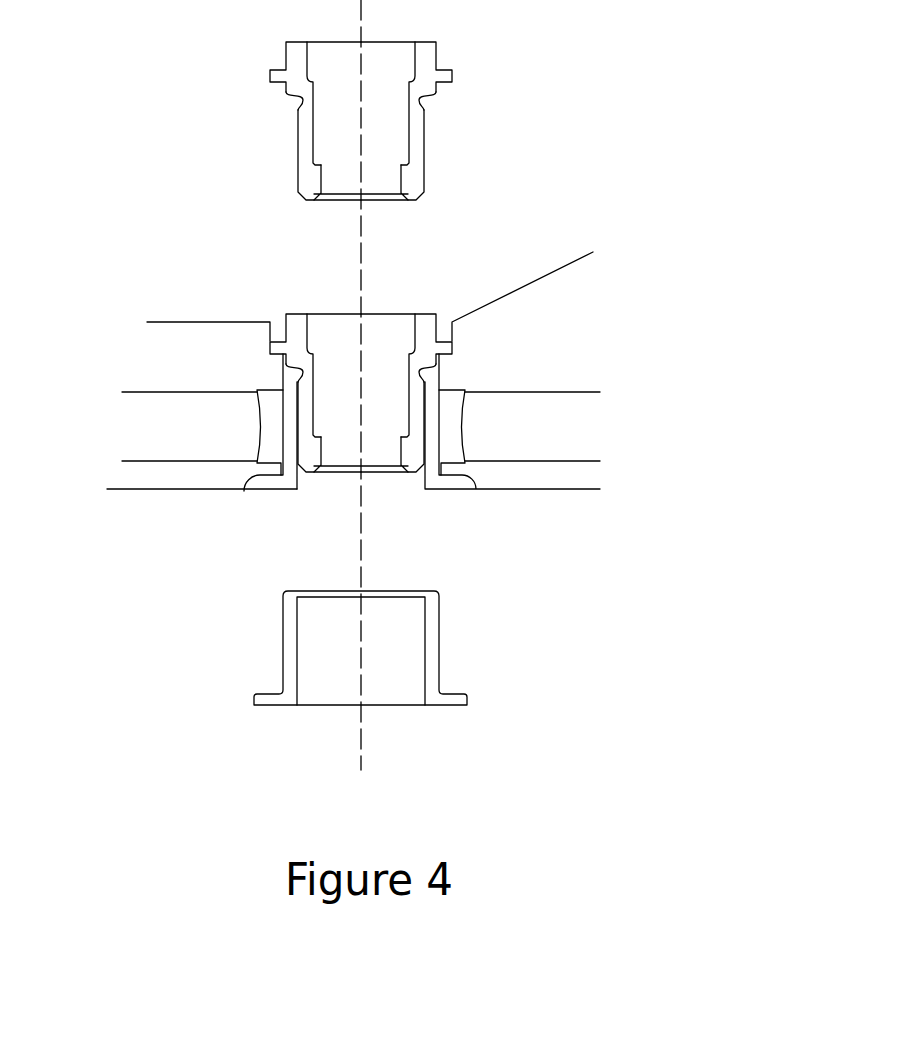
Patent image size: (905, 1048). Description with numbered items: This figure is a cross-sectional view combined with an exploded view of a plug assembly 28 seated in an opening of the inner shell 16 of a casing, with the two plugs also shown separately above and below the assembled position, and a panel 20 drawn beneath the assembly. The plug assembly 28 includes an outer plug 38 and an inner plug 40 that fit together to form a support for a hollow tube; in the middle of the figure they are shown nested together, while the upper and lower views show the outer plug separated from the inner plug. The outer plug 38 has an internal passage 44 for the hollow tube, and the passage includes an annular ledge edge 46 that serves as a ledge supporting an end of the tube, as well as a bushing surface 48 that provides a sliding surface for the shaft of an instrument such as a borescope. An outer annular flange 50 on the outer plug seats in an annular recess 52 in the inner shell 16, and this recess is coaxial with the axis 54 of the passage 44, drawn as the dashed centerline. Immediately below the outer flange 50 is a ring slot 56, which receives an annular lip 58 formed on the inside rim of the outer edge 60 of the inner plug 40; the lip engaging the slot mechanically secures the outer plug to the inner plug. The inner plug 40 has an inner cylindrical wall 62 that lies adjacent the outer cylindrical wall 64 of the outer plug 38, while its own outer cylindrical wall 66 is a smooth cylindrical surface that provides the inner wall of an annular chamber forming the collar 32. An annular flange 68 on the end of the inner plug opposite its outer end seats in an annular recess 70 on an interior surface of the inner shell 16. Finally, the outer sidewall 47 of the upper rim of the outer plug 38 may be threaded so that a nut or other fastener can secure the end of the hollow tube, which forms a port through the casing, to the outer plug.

The inner shell 16 is at (522, 316).
The second panel 20 is at (521, 435).
The plug assembly 28 is at (443, 368).
The collar 32 is at (272, 428).
The outer plug 38 is at (426, 144).
The inner plug 40 is at (440, 643).
The internal passage 44 is at (392, 414).
The annular ledge edge 46 is at (428, 97).
The outer sidewall 47 is at (286, 54).
The bushing surface 48 is at (400, 181).
The outer annular flange 50 is at (451, 71).
The annular recess 52 is at (272, 355).
The axis 54 is at (361, 530).
The ring slot 56 is at (296, 101).
The annular lip 58 is at (298, 591).
The outer edge 60 is at (434, 590).
The inner cylindrical wall 62 is at (416, 680).
The outer cylindrical wall 64 is at (296, 148).
The outer cylindrical wall 66 is at (283, 668).
The annular flange 68 is at (264, 700).
The annular recess 70 is at (243, 480).